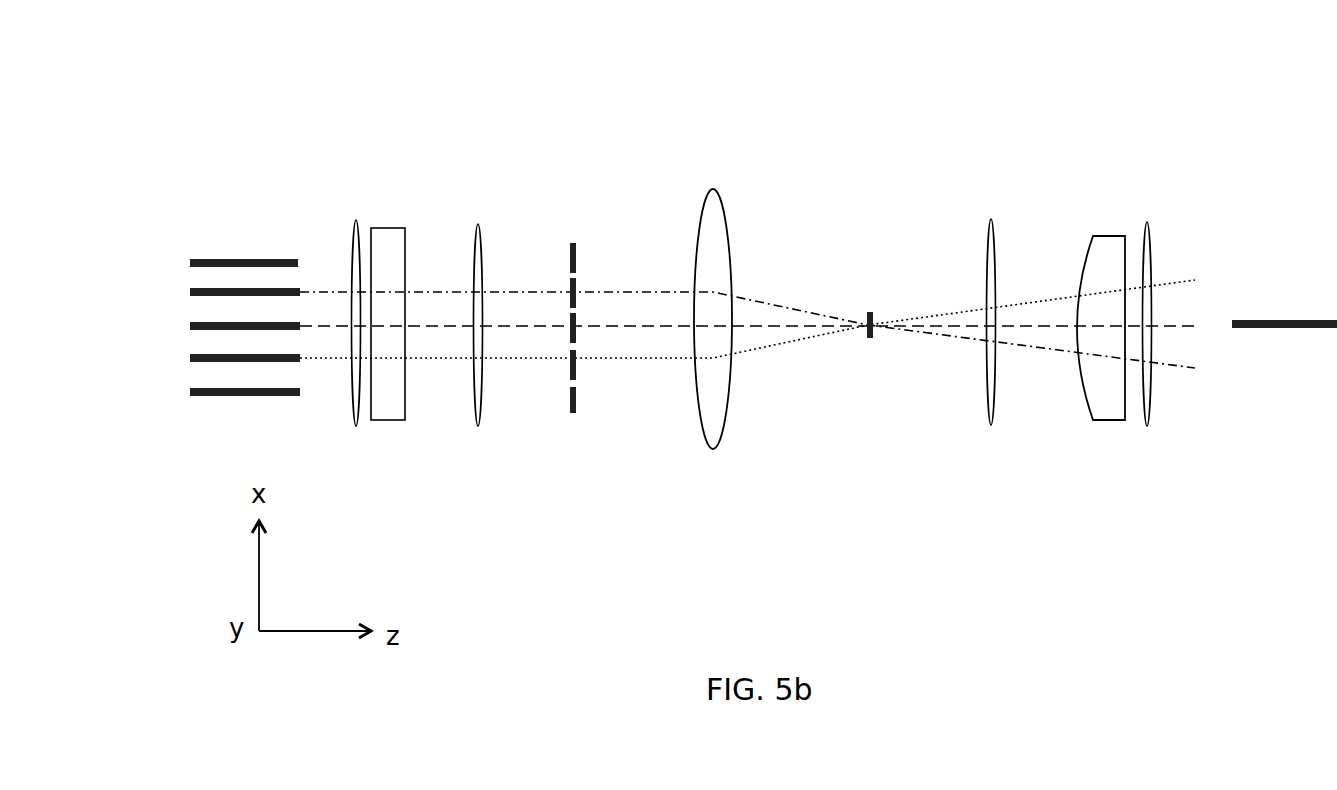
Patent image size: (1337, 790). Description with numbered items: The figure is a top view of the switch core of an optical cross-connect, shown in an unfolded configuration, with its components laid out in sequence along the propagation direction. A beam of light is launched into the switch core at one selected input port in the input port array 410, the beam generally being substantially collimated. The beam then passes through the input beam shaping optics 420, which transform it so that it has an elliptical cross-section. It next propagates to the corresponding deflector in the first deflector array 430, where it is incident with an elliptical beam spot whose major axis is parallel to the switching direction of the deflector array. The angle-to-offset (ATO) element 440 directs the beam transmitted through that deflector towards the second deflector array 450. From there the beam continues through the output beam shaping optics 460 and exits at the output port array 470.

The input port array 410 is at (298, 252).
The input beam shaping optics 420 is at (397, 177).
The first deflector array 430 is at (572, 217).
The angle-to-offset (ATO) element 440 is at (706, 167).
The second deflector array 450 is at (873, 212).
The output beam shaping optics 460 is at (1110, 178).
The output port array 470 is at (1230, 300).